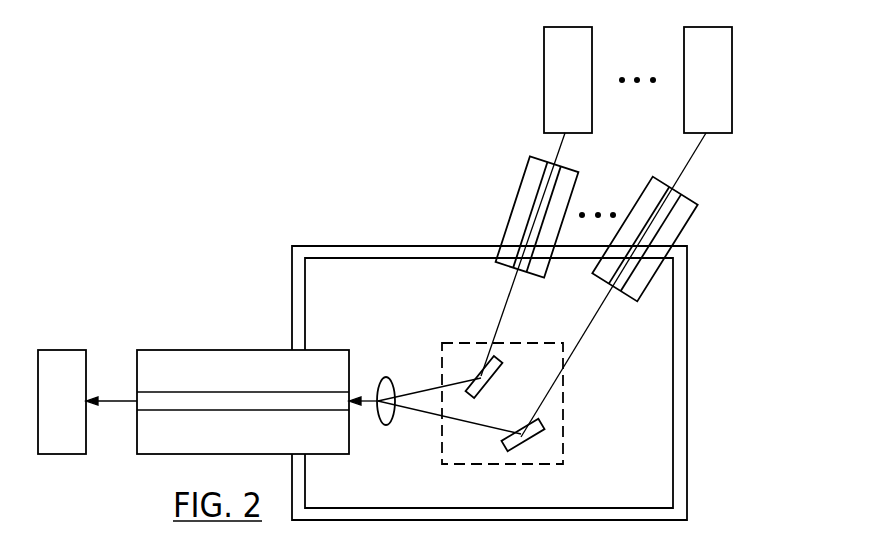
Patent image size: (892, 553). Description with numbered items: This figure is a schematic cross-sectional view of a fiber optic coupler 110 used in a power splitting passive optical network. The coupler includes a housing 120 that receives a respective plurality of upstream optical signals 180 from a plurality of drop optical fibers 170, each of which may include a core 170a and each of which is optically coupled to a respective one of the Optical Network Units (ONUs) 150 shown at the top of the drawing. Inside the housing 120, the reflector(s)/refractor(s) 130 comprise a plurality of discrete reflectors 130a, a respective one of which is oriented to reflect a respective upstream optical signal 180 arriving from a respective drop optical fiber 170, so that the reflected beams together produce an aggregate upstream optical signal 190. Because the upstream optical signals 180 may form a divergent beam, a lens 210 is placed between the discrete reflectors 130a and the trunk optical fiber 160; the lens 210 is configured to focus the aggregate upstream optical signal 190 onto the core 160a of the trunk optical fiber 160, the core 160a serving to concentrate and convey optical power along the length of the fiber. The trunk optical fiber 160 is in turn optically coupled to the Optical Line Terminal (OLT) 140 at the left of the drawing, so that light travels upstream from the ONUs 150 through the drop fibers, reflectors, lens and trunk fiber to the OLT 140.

The fiber optic coupler 110 is at (392, 216).
The housing 120 is at (303, 257).
The reflector(s)/refractor(s) 130 is at (468, 342).
The discrete reflector 130a is at (495, 386).
The Optical Line Terminal (OLT) 140 is at (60, 350).
The Optical Network Units (ONUs) 150 is at (684, 100).
The trunk optical fiber 160 is at (218, 350).
The core 160a is at (222, 400).
The drop optical fibers 170 is at (521, 183).
The core 170a is at (531, 233).
The upstream optical signals 180 is at (576, 341).
The aggregate upstream optical signal 190 is at (378, 391).
The lens 210 is at (396, 385).